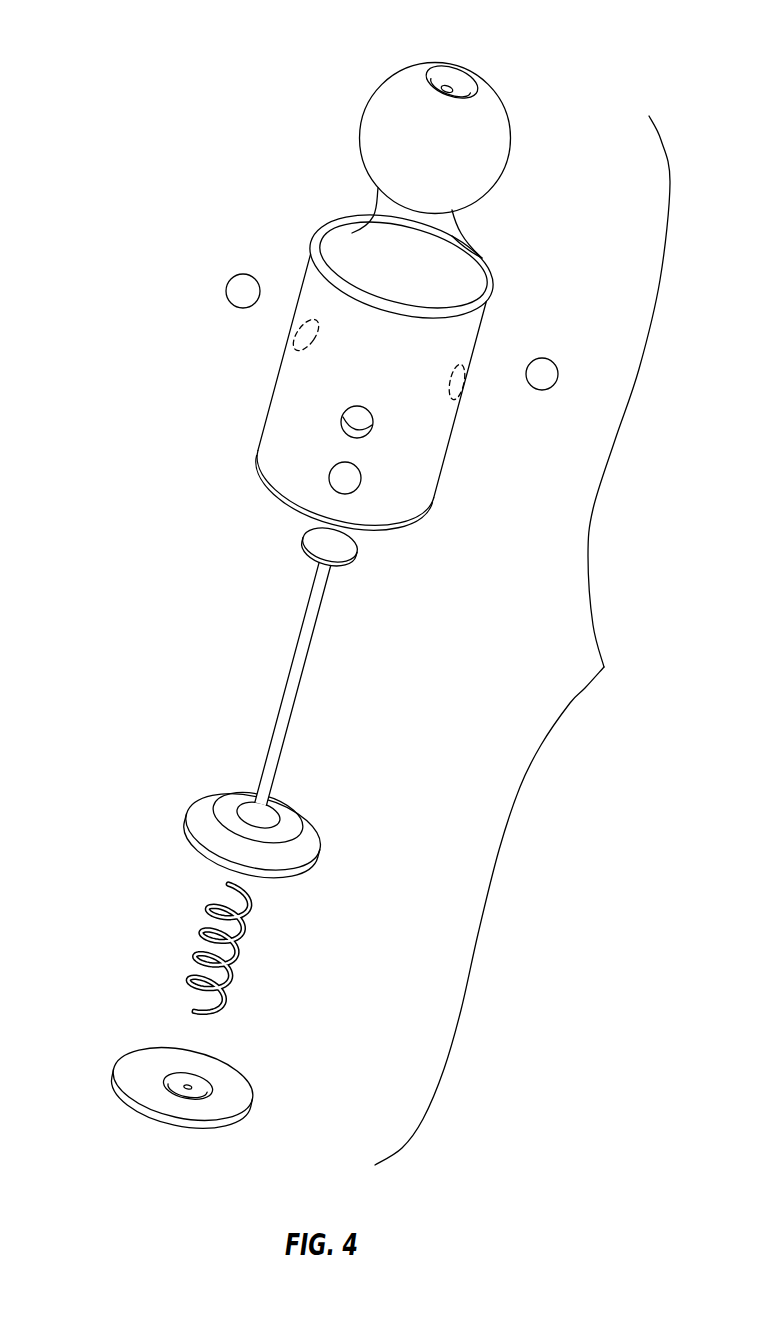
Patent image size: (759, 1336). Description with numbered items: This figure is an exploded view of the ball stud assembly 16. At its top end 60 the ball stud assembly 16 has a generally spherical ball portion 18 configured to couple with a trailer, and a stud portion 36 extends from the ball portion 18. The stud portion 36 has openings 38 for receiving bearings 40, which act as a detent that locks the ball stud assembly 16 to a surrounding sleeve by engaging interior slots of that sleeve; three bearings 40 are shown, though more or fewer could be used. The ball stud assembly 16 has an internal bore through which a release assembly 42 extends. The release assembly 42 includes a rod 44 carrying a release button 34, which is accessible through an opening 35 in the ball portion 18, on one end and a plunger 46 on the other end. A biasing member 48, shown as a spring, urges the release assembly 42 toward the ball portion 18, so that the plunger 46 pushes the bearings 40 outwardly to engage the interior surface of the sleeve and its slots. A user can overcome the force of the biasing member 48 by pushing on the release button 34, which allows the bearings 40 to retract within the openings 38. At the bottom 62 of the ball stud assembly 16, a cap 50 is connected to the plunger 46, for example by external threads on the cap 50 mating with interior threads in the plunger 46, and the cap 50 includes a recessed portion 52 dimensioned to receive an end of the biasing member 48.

The ball stud assembly 16 is at (522, 640).
The ball portion 18 is at (500, 125).
The release button 34 is at (318, 541).
The opening 35 is at (462, 73).
The stud portion 36 is at (440, 470).
The openings 38 is at (296, 335).
The bearings 40 is at (230, 280).
The release assembly 42 is at (164, 714).
The rod 44 is at (294, 667).
The plunger 46 is at (202, 808).
The biasing member 48 is at (208, 930).
The cap 50 is at (160, 1050).
The recessed portion 52 is at (200, 1083).
The top end 60 is at (400, 59).
The bottom 62 is at (130, 1126).